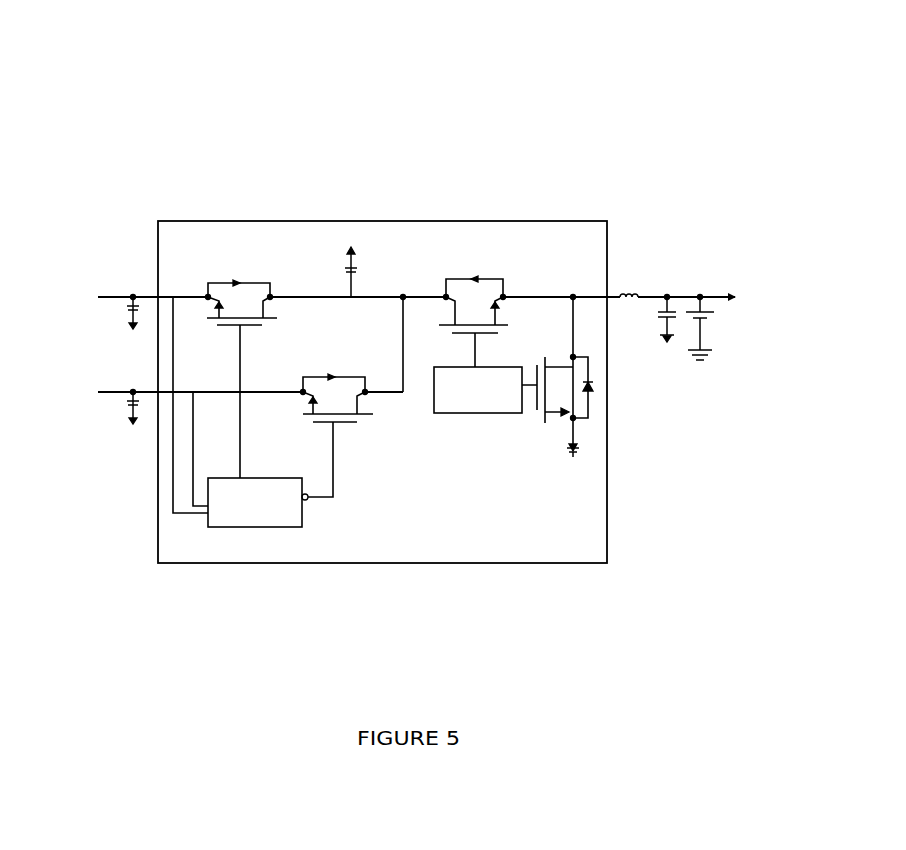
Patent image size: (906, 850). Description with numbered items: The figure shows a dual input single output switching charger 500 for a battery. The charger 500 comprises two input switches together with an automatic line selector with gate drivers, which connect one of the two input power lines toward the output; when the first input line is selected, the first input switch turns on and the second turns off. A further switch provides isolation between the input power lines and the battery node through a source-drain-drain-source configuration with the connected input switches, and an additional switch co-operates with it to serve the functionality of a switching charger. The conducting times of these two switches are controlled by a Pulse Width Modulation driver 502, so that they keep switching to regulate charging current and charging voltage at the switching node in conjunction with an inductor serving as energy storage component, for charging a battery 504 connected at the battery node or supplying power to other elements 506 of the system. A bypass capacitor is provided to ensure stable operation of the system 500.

The charger 500 is at (343, 107).
The Pulse Width Modulation driver 502 is at (485, 422).
The battery 504 is at (715, 320).
The other elements 506 is at (737, 296).